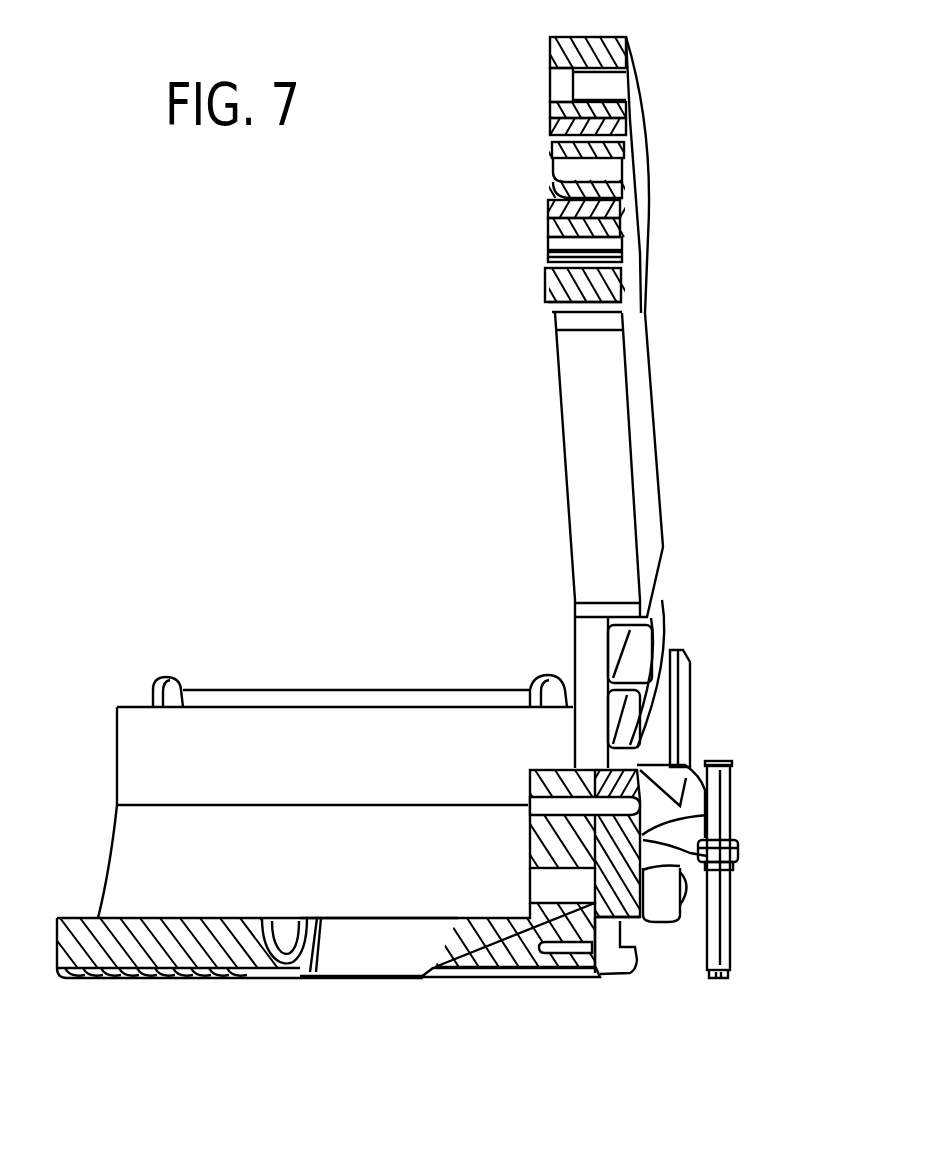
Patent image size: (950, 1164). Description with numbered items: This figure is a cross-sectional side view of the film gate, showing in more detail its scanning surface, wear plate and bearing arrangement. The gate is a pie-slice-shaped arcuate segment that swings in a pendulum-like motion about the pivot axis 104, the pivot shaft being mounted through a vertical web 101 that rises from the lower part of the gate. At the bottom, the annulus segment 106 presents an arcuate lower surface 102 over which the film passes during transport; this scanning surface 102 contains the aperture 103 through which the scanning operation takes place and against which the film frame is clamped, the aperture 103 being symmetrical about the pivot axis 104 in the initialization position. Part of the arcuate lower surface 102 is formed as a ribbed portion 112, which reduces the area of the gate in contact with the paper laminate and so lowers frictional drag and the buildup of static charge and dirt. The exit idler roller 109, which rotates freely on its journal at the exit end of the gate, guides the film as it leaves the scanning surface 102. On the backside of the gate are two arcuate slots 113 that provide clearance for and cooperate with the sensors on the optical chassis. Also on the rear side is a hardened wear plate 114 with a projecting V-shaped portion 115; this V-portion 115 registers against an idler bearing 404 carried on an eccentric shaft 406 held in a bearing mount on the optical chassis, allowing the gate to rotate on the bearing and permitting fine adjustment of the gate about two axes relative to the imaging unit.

The vertical web 101 is at (641, 430).
The lower surface 102 is at (464, 978).
The aperture 103 is at (393, 958).
The pivot axis 104 is at (637, 127).
The annulus segment 106 is at (496, 922).
The exit idler roller 109 is at (370, 700).
The ribbed portion 112 is at (141, 1003).
The arcuate slots 113 is at (647, 625).
The hardened wear plate 114 is at (638, 949).
The projecting V-shaped portion 115 is at (702, 818).
The idler bearing 404 is at (741, 845).
The eccentric shaft 406 is at (722, 920).